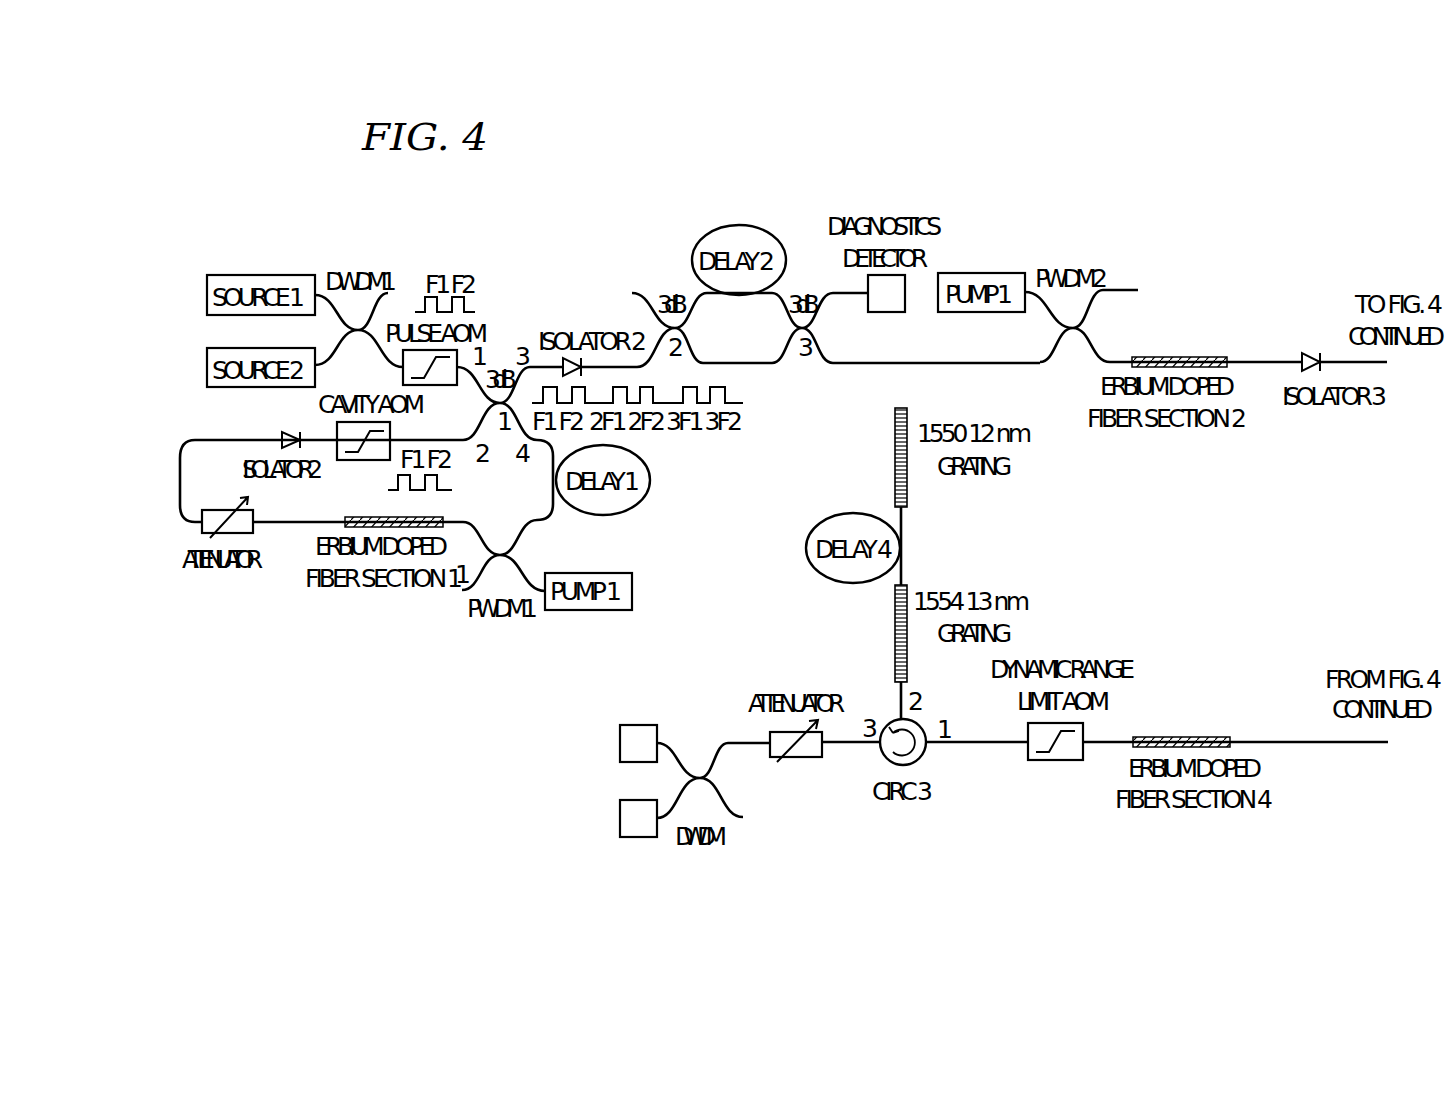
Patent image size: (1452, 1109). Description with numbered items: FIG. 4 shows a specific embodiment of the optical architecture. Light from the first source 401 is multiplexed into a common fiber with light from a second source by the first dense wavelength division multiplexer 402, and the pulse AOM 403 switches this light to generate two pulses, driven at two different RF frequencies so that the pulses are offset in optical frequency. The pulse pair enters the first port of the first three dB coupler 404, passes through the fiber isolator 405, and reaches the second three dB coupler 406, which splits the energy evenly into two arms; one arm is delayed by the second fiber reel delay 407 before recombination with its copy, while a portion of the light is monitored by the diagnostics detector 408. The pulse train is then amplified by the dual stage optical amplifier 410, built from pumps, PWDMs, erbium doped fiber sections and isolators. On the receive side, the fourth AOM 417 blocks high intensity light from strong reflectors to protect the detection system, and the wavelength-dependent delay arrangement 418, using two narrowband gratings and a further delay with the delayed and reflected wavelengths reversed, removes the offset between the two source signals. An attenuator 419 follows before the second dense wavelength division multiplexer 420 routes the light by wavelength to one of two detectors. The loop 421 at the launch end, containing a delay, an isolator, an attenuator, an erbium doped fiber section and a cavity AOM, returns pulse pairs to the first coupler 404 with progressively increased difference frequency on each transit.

The source 1 401 is at (246, 268).
The dense wavelength division multiplexer 1 402 is at (355, 262).
The pulse AOM 403 is at (448, 265).
The first 3 dB coupler 404 is at (500, 350).
The fiber isolator 405 is at (584, 315).
The second 3 dB coupler 406 is at (670, 285).
The Delay 2 407 is at (740, 225).
The diagnostics detector 408 is at (886, 215).
The dual stage optical amplifier 410 is at (1179, 350).
The fourth AOM 417 is at (1053, 762).
The wavelength-dependent delay arrangement 418 is at (807, 553).
The attenuator 419 is at (702, 850).
The DWDM 2 420 is at (615, 782).
The loop 421 is at (285, 582).